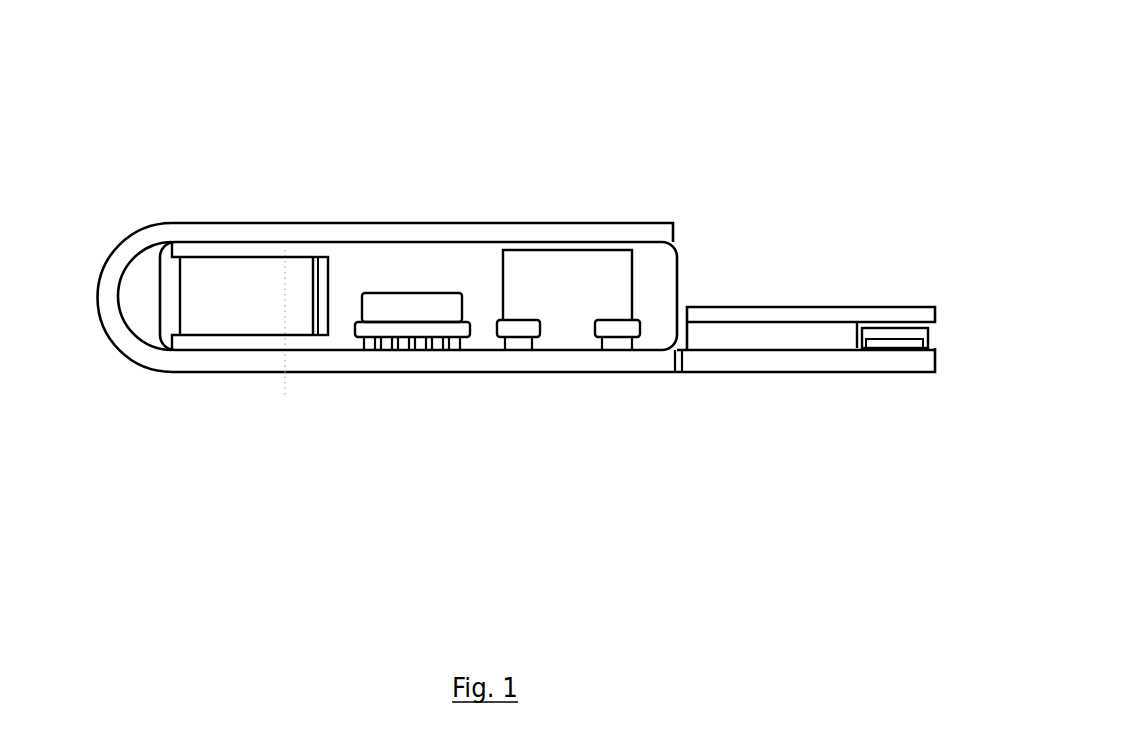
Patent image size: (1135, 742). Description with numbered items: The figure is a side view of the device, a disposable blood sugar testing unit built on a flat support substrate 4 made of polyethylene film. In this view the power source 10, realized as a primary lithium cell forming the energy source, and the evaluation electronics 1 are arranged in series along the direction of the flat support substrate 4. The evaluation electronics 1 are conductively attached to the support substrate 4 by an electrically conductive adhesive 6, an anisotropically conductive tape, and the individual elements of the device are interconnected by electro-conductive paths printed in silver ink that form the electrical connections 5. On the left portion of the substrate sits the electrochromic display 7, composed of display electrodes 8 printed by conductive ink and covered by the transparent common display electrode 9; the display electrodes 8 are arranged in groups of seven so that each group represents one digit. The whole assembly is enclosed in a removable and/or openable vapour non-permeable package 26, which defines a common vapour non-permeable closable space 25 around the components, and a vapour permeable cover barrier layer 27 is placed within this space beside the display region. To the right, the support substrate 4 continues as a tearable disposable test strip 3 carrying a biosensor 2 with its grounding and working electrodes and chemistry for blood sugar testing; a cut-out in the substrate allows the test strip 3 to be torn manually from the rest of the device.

The evaluation electronics 1 is at (377, 302).
The biosensor 2 is at (888, 333).
The disposable test strip 3 is at (727, 360).
The support substrate 4 is at (585, 360).
The electrical connections 5 is at (517, 340).
The electrically conductive adhesive 6 is at (437, 327).
The electrochromic display 7 is at (205, 292).
The display electrode 8 is at (221, 343).
The common display electrode 9 is at (213, 247).
The energy source 10 is at (612, 273).
The common vapour non-permeable closable space 25 is at (447, 265).
The removable and/or openable vapour non-permeable package 26 is at (677, 250).
The vapour permeable cover barrier layer 27 is at (305, 288).